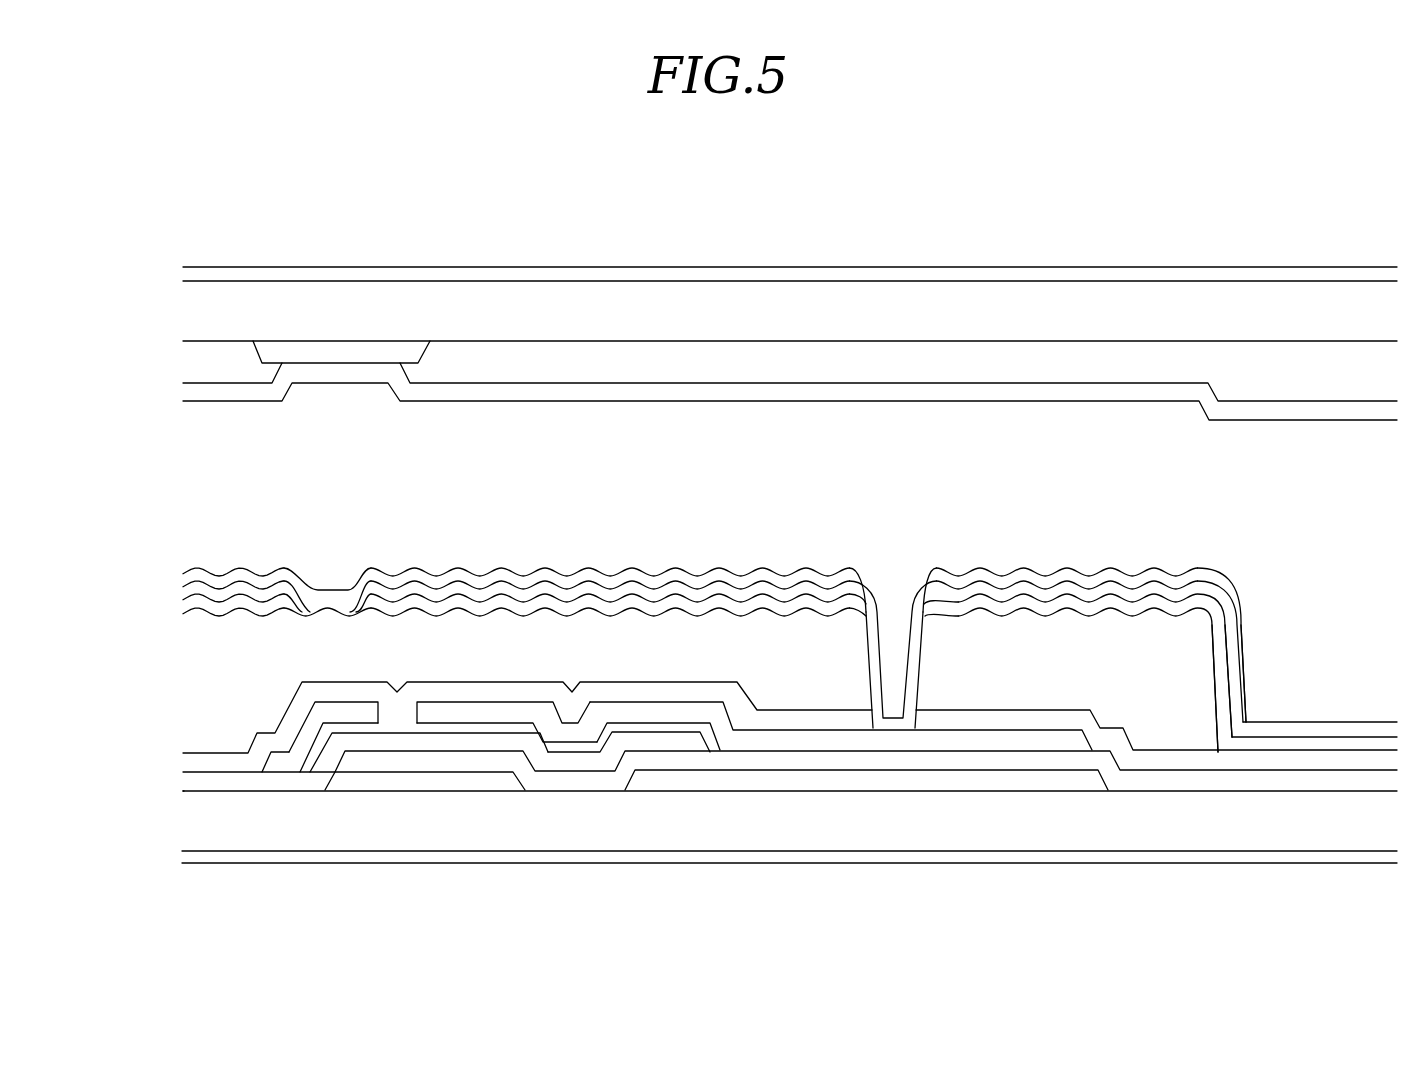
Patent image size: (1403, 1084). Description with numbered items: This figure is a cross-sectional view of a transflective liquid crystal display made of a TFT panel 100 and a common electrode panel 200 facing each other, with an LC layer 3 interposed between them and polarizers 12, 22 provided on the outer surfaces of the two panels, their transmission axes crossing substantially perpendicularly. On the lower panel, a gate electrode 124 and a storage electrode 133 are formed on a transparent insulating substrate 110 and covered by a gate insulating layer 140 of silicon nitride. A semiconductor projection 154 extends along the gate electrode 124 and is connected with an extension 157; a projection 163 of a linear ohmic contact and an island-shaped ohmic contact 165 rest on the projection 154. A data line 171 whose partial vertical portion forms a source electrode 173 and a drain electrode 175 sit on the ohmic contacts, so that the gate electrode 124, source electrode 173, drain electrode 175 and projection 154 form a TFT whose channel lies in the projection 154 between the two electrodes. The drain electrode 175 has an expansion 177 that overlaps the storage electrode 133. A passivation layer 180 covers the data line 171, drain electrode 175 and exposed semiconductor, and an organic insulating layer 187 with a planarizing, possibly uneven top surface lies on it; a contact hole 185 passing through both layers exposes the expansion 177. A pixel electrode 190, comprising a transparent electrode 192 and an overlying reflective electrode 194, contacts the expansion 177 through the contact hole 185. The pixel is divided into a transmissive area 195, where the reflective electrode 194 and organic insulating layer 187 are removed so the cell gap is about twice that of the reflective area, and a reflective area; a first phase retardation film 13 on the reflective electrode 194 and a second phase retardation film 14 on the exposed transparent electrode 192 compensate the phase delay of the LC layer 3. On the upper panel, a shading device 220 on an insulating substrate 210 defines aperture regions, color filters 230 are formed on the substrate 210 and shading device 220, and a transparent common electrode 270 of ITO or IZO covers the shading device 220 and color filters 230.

The LC layer 3 is at (195, 490).
The polarizer 12 is at (1350, 862).
The first phase retardation film 13 is at (1112, 570).
The second phase retardation film 14 is at (1320, 725).
The polarizer 22 is at (1050, 275).
The TFT panel 100 is at (173, 823).
The insulating substrate 110 is at (1275, 835).
The gate electrode 124 is at (413, 787).
The storage electrode 133 is at (1000, 783).
The gate insulating layer 140 is at (1144, 792).
The projection 154 is at (383, 748).
The extension 157 is at (687, 755).
The projection 163 is at (332, 727).
The island-shaped ohmic contact 165 is at (458, 730).
The data line 171 is at (272, 763).
The source electrode 173 is at (347, 715).
The drain electrode 175 is at (478, 722).
The expansion 177 is at (900, 743).
The passivation layer 180 is at (337, 692).
The contact hole 185 is at (870, 662).
The organic insulating layer 187 is at (248, 640).
The pixel electrode 190 is at (750, 505).
The transparent electrode 192 is at (683, 600).
The reflective electrode 194 is at (737, 585).
The transmissive area 195 is at (1215, 653).
The common electrode panel 200 is at (176, 306).
The insulating substrate 210 is at (400, 307).
The shading device 220 is at (315, 352).
The color filter 230 is at (215, 355).
The common electrode 270 is at (713, 388).